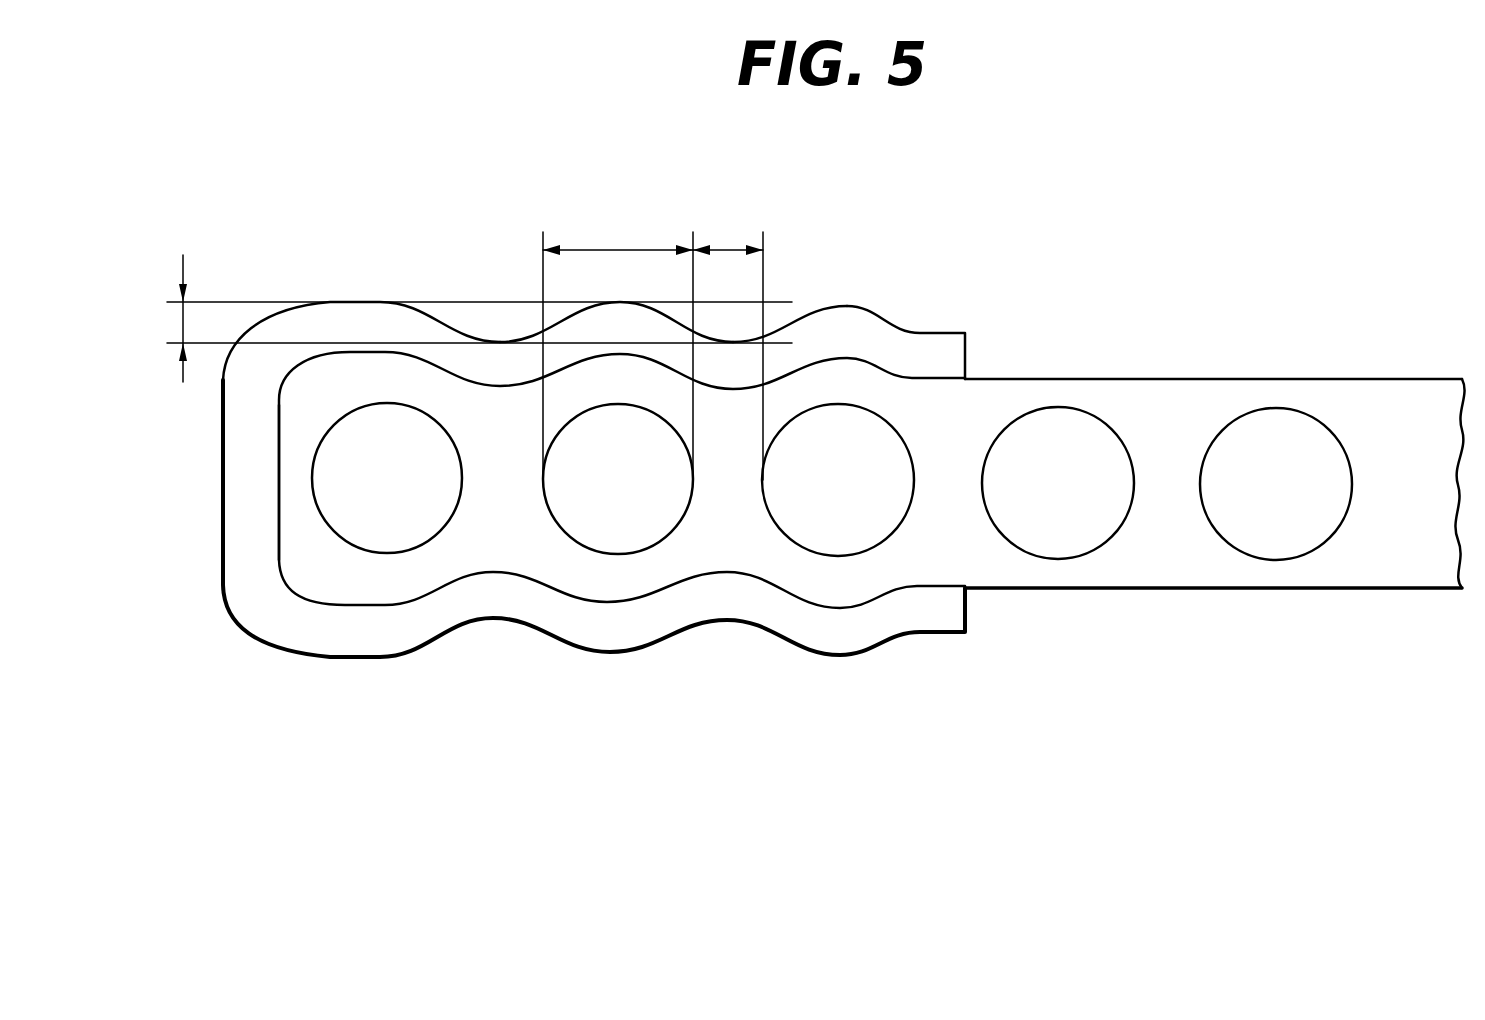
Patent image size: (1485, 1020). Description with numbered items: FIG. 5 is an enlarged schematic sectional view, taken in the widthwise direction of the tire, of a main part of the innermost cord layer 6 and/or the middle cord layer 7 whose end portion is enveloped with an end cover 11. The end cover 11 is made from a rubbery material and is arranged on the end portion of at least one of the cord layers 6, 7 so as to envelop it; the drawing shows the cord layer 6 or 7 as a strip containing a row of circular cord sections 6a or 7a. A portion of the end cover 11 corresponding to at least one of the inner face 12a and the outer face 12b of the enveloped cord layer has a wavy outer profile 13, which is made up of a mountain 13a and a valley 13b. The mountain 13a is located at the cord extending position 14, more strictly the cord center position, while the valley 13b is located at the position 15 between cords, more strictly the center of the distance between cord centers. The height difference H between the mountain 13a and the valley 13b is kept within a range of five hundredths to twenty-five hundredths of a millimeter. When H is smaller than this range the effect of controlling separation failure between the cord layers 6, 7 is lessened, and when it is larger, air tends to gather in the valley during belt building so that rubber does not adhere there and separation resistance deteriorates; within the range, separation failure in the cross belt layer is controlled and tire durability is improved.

The innermost cord layer 6 is at (1215, 422).
The middle cord layer 7 is at (1152, 353).
The holes of first plate 6a is at (850, 430).
The holes of second plate 7a is at (1285, 433).
The end cover 11 is at (372, 637).
The inner face 12a is at (617, 603).
The outer face 12b is at (503, 384).
The wavy outer profile 13 is at (906, 318).
The mountain 13a is at (622, 301).
The valley 13b is at (737, 341).
The cord extending position 14 is at (618, 347).
The position between cords 15 is at (728, 347).
The height difference H is at (474, 318).